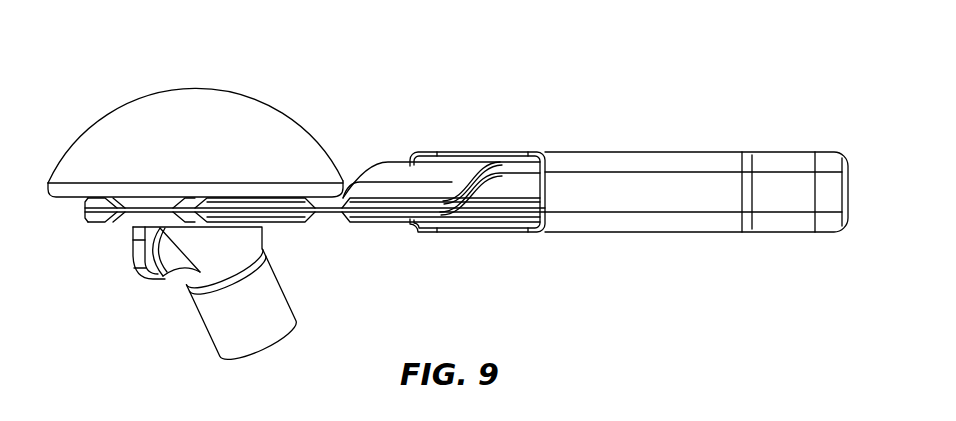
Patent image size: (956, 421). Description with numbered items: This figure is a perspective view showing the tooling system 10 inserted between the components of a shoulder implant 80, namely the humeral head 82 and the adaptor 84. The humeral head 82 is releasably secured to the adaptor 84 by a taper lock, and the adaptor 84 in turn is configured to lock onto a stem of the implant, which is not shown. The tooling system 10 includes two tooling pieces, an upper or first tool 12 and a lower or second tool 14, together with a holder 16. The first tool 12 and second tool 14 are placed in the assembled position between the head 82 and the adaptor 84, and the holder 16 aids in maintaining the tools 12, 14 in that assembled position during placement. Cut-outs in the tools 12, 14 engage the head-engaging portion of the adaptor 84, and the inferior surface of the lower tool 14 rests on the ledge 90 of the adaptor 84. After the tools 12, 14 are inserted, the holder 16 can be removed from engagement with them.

The tooling system 10 is at (659, 55).
The upper tool 12 is at (384, 166).
The lower tool 14 is at (390, 218).
The holder 16 is at (582, 150).
The shoulder implant 80 is at (122, 83).
The humeral head 82 is at (100, 137).
The adaptor 84 is at (203, 325).
The ledge 90 is at (125, 228).